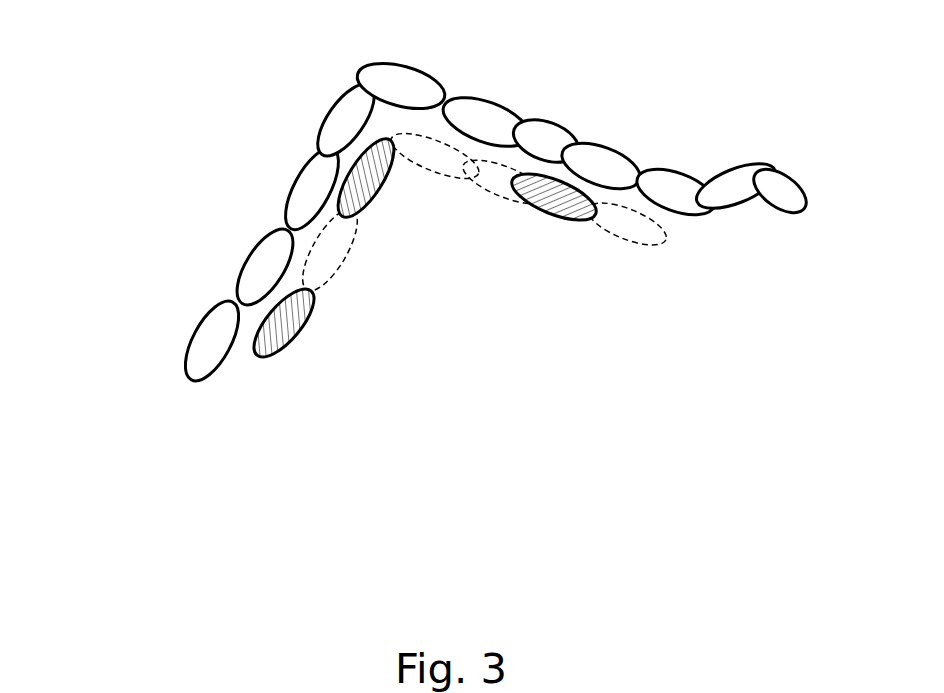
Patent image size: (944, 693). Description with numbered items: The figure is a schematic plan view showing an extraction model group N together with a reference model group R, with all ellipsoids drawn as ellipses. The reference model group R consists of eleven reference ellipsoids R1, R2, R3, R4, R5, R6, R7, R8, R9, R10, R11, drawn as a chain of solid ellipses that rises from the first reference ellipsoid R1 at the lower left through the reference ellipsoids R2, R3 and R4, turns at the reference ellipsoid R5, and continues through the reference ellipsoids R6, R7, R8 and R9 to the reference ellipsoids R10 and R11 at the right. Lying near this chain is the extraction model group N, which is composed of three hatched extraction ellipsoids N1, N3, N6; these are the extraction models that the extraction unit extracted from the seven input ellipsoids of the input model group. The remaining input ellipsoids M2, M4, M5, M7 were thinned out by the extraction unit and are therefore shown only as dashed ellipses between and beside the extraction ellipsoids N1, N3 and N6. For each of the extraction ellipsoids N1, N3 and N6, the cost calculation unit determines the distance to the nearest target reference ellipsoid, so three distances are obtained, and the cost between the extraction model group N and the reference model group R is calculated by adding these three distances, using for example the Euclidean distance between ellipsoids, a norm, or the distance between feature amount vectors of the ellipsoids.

The reference model group R is at (185, 248).
The reference ellipsoid R1 is at (196, 349).
The reference ellipsoid R2 is at (264, 256).
The reference ellipsoid R3 is at (311, 184).
The reference ellipsoid R4 is at (340, 120).
The reference ellipsoid R5 is at (395, 79).
The reference ellipsoid R6 is at (478, 112).
The reference ellipsoid R7 is at (536, 134).
The reference ellipsoid R8 is at (605, 160).
The reference ellipsoid R9 is at (658, 178).
The reference ellipsoid R10 is at (725, 188).
The reference ellipsoid R11 is at (772, 188).
The extraction model group N is at (703, 262).
The extraction ellipsoid N1 is at (293, 332).
The extraction ellipsoid N3 is at (368, 198).
The extraction ellipsoid N6 is at (557, 218).
The input ellipsoid M2 is at (340, 256).
The input ellipsoid M4 is at (438, 172).
The input ellipsoid M5 is at (498, 196).
The input ellipsoid M7 is at (629, 240).